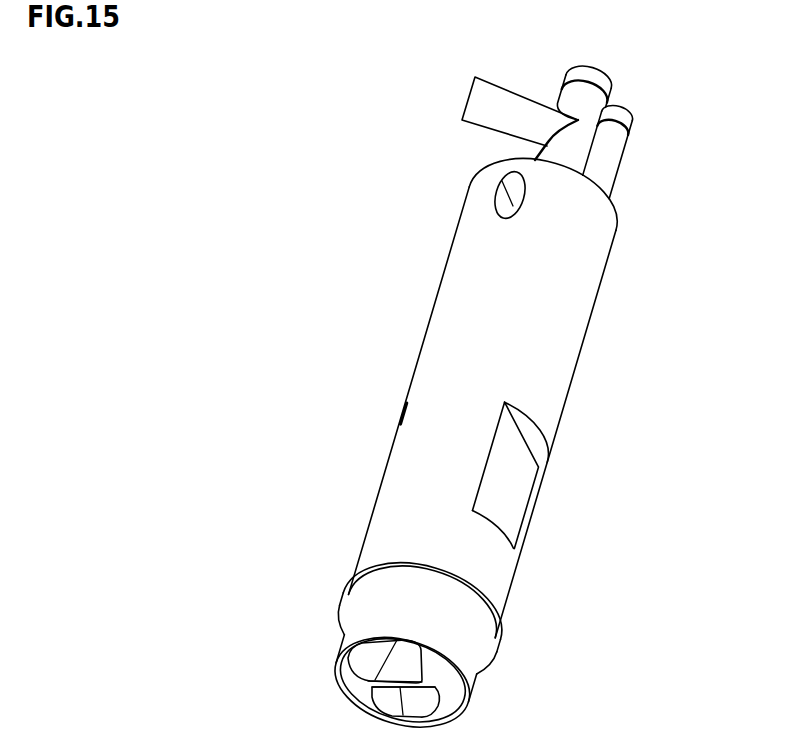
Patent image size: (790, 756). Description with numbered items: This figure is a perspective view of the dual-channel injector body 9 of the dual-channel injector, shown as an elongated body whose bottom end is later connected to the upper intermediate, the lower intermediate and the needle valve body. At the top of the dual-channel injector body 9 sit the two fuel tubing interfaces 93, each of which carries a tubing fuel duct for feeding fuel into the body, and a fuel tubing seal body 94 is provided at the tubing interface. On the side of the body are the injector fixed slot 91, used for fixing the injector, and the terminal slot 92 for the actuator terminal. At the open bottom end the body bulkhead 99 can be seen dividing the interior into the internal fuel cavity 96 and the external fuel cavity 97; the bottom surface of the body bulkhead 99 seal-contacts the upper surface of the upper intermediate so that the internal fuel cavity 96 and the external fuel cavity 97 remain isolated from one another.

The dual-channel injector body 9 is at (565, 348).
The injector fixed slot 91 is at (503, 472).
The terminal slot 92 is at (497, 207).
The fuel tubing interface 93 is at (500, 100).
The fuel tubing seal body 94 is at (597, 82).
The internal fuel cavity 96 is at (413, 710).
The external fuel cavity 97 is at (397, 663).
The body bulkhead 99 is at (397, 687).